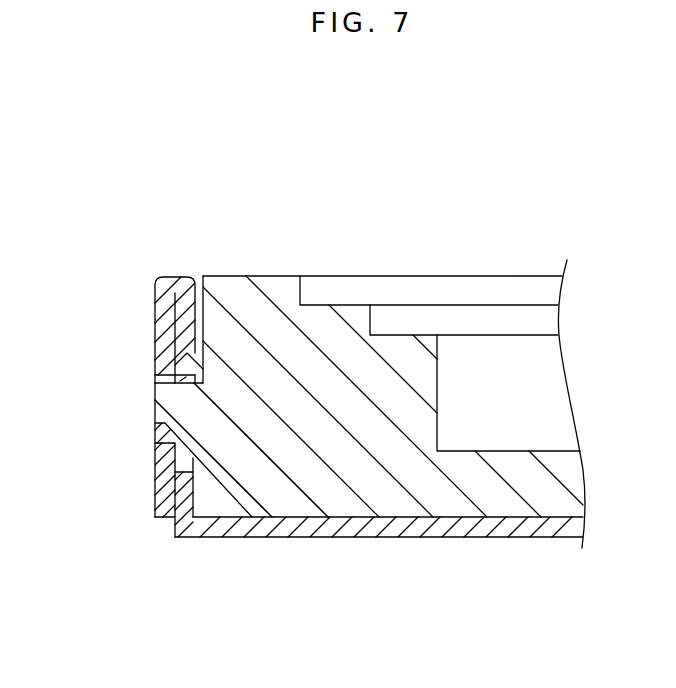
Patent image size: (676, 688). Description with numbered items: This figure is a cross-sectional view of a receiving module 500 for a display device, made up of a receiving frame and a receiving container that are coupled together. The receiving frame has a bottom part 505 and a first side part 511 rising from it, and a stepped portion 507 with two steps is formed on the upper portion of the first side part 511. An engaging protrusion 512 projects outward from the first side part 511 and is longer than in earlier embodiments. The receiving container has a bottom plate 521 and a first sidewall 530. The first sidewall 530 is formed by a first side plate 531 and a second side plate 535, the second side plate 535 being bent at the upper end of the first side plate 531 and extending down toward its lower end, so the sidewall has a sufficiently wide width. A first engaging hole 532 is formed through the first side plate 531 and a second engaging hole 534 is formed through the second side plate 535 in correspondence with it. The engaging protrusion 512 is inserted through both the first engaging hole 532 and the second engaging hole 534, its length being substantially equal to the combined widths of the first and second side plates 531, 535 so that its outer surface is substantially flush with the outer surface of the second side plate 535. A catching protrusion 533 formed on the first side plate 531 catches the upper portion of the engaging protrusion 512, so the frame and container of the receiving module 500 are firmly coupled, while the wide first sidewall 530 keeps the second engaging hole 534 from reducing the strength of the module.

The receiving module 500 is at (336, 122).
The bottom part 505 is at (518, 493).
The stepped portion 507 is at (398, 335).
The first side part 511 is at (313, 383).
The engaging protrusion 512 is at (185, 397).
The bottom plate 521 is at (423, 520).
The first sidewall 530 is at (128, 473).
The first side plate 531 is at (185, 496).
The first engaging hole 532 is at (183, 377).
The catching protrusion 533 is at (204, 369).
The second engaging hole 534 is at (160, 433).
The second side plate 535 is at (158, 443).